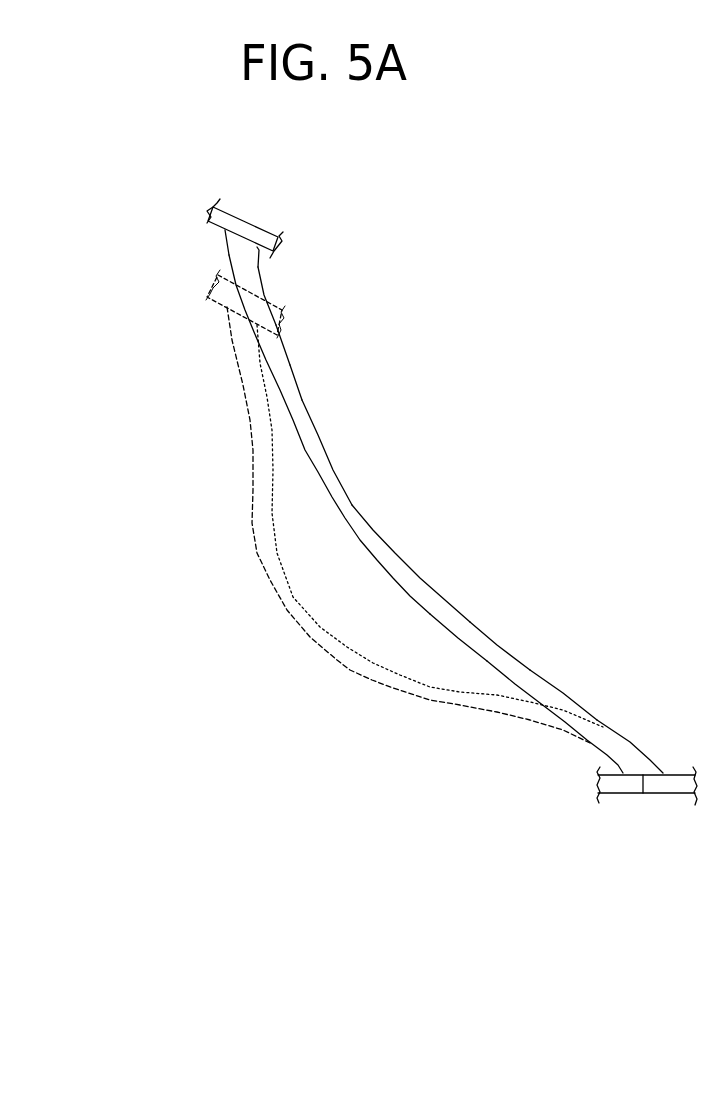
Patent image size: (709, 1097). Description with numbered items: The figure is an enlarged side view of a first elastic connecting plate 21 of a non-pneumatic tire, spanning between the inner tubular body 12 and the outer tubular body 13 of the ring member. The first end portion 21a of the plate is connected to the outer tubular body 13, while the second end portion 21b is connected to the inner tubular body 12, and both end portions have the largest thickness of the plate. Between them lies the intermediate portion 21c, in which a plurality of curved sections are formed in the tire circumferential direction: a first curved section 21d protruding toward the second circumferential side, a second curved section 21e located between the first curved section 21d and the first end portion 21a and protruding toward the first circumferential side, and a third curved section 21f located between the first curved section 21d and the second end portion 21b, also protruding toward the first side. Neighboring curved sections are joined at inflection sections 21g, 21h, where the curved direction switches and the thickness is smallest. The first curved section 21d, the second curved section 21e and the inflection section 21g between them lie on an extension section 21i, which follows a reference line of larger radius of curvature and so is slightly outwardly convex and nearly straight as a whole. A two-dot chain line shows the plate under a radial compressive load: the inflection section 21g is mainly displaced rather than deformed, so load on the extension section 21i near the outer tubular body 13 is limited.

The inner tubular body 12 is at (245, 199).
The outer tubular body 13 is at (650, 754).
The first elastic connecting plate 21 is at (402, 550).
The first end portion 21a is at (650, 822).
The second end portion 21b is at (193, 255).
The intermediate portion 21c is at (371, 452).
The first curved section 21d is at (383, 525).
The second curved section 21e is at (637, 713).
The third curved section 21f is at (288, 303).
The inflection section 21g is at (434, 681).
The inflection section 21h is at (333, 341).
The extension section 21i is at (527, 629).